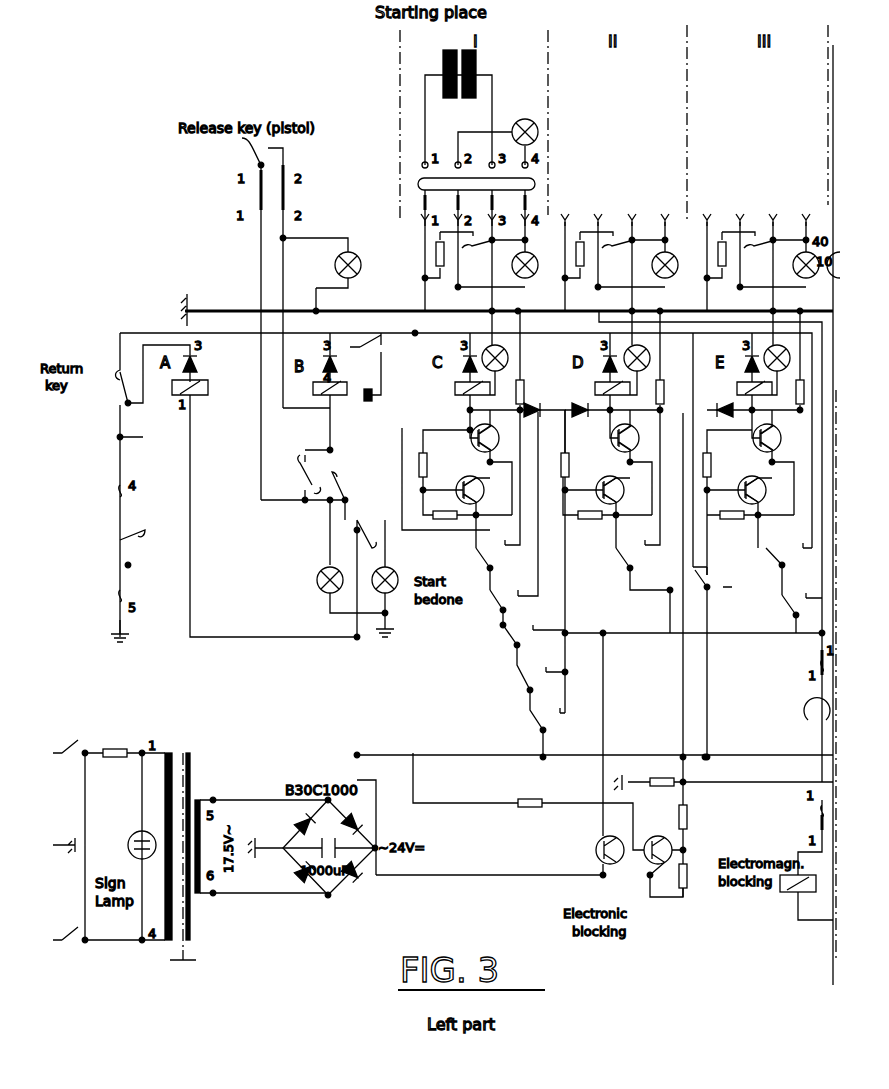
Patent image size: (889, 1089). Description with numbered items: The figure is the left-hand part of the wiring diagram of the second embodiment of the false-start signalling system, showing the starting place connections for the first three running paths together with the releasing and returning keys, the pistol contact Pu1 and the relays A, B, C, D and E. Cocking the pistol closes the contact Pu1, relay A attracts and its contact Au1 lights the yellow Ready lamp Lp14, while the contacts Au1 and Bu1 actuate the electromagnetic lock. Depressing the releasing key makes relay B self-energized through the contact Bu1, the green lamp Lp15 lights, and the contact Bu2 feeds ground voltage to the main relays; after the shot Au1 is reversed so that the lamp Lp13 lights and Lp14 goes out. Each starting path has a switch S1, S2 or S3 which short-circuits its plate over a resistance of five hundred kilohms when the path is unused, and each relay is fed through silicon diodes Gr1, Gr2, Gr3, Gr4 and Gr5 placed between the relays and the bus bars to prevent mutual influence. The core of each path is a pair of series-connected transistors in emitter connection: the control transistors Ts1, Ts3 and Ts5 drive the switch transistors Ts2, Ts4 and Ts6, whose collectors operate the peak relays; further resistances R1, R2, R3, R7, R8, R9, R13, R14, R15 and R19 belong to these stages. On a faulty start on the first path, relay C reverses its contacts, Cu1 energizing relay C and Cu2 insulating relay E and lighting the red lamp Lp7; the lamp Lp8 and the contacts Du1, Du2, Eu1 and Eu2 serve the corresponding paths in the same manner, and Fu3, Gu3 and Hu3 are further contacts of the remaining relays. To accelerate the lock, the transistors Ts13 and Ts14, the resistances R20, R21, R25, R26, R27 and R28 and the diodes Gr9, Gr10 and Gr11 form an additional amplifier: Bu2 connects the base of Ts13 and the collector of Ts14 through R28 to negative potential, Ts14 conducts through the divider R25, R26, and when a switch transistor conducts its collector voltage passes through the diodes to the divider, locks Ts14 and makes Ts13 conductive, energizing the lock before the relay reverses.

The tell-tale lamp Lp15 is at (344, 260).
The tell-tale lamp Lp7 is at (535, 258).
The lamp Lp8 is at (674, 258).
The lamp Lp13 is at (391, 579).
The tell-tale lamp Lp14 is at (328, 584).
The diode Gr1 is at (203, 364).
The diode Gr2 is at (343, 364).
The diode Gr3 is at (457, 372).
The diode Gr4 is at (597, 372).
The diode Gr5 is at (739, 372).
The diode Gr9 is at (542, 423).
The diode Gr10 is at (587, 418).
The diode Gr11 is at (729, 412).
The resistor R1 is at (529, 392).
The resistor R2 is at (669, 392).
The resistor R3 is at (809, 392).
The resistor R7 is at (433, 465).
The resistor R8 is at (575, 465).
The resistor R9 is at (717, 465).
The resistor R13 is at (447, 507).
The resistor R14 is at (590, 507).
The resistor R15 is at (731, 507).
The resistor R19 is at (449, 259).
The resistance R20 is at (589, 259).
The resistance R21 is at (731, 259).
The resistance R25 is at (657, 785).
The resistance R26 is at (697, 820).
The resistance R27 is at (679, 888).
The resistance R28 is at (528, 801).
The control transistor Ts1 is at (467, 481).
The switch transistor Ts2 is at (494, 433).
The control transistor Ts3 is at (610, 481).
The switch transistor Ts4 is at (634, 433).
The control transistor Ts5 is at (752, 481).
The switch transistor Ts6 is at (776, 433).
The transistor Ts13 is at (605, 765).
The transistor Ts14 is at (663, 847).
The switch S1 is at (476, 257).
The switch S2 is at (616, 257).
The switch S3 is at (758, 257).
The switching contact Au1 is at (358, 519).
The switching contact Bu1 is at (329, 473).
The switching contact Bu2 is at (370, 359).
The contact-piece Du1 is at (487, 500).
The relay contact Du2 is at (794, 609).
The contact-piece Eu1 is at (500, 512).
The relay contact Eu2 is at (707, 657).
The switching contact Cu1 is at (635, 521).
The switching contact Cu2 is at (778, 565).
The relay contact Fu3 is at (527, 633).
The relay contact Gu3 is at (535, 675).
The relay contact Hu3 is at (551, 718).
The contact Pu1 is at (98, 543).